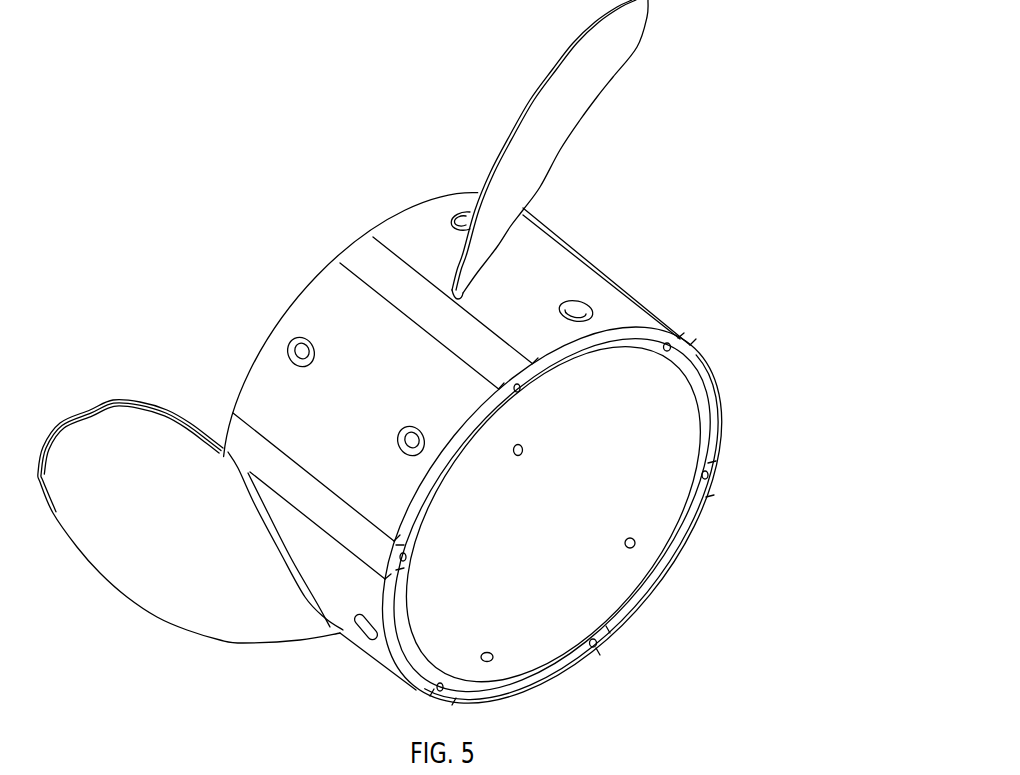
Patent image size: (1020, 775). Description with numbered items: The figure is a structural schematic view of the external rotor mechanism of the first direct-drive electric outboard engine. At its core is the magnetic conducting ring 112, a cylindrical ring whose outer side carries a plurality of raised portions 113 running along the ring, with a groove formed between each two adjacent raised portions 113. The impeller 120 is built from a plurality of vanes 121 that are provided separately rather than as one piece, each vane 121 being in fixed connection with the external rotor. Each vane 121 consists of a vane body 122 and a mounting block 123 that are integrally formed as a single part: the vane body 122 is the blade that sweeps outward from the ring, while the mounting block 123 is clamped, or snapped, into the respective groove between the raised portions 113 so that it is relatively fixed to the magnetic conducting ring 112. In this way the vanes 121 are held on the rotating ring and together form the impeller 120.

The impeller 120 is at (410, 214).
The magnetic conducting ring 112 is at (660, 485).
The raised portion 113 is at (370, 263).
The vane 121 is at (408, 321).
The vane body 122 is at (587, 88).
The mounting block 123 is at (577, 286).